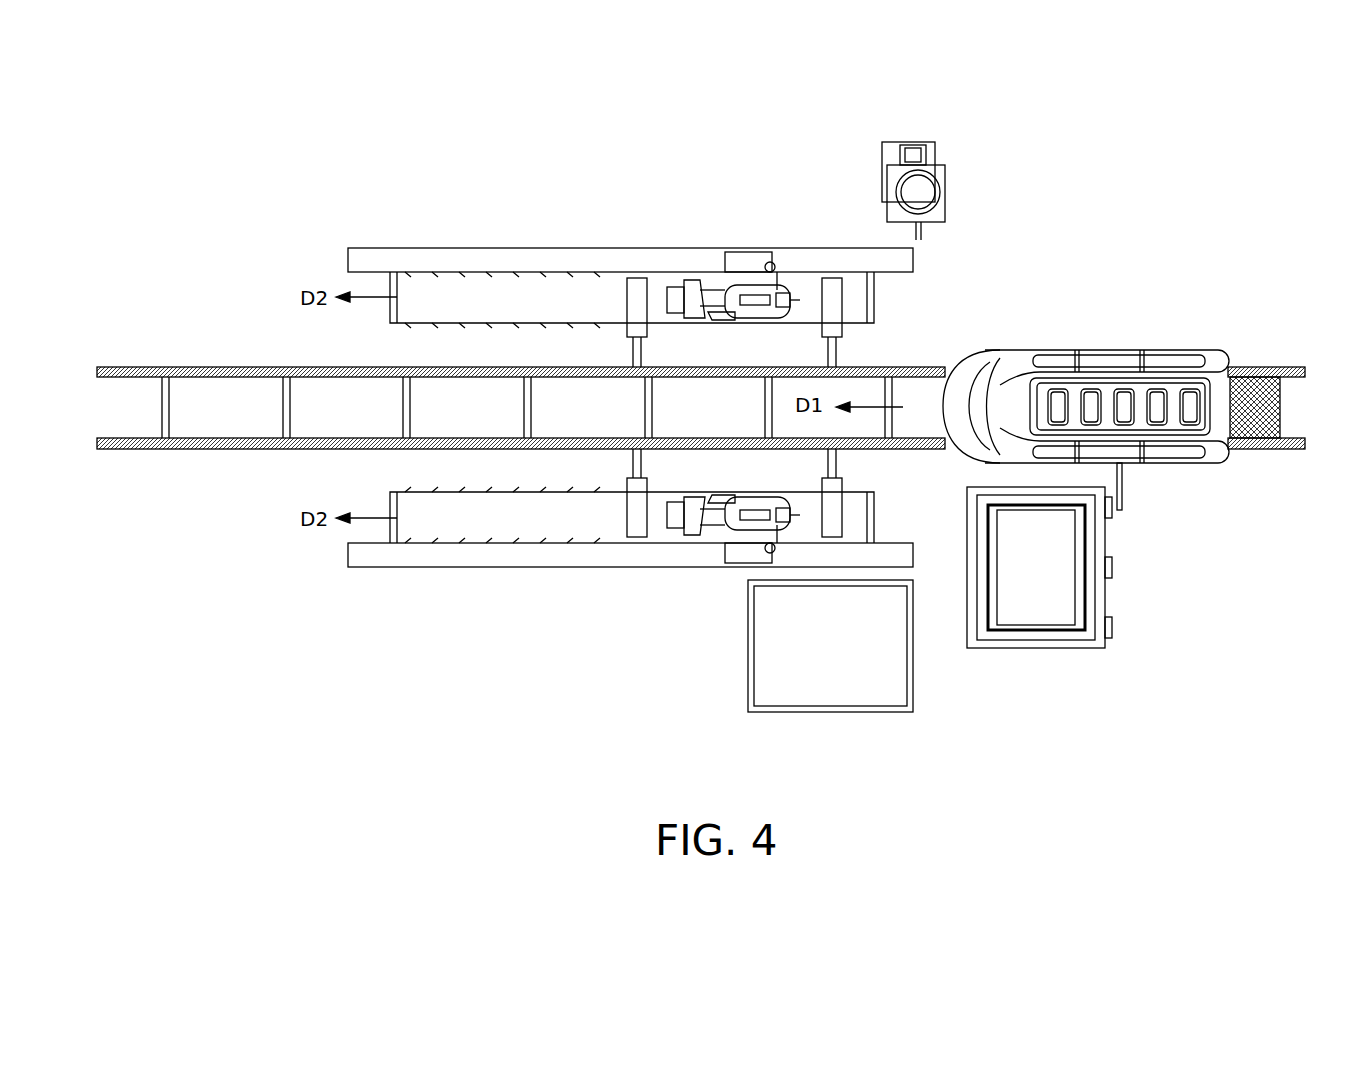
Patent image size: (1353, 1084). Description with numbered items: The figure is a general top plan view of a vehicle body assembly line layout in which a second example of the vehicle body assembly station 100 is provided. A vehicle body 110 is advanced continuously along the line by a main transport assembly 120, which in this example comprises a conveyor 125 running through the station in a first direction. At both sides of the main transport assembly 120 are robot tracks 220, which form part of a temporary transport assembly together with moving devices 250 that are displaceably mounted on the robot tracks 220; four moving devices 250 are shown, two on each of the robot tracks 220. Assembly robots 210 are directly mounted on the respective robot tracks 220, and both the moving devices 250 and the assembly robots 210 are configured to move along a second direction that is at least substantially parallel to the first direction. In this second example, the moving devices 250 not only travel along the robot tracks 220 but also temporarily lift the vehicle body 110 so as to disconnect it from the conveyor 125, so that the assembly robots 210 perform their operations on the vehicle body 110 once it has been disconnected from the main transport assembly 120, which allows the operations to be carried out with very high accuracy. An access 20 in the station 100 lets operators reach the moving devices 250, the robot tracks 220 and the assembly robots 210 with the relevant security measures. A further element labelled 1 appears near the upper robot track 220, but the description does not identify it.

The vehicle body assembly station 100 is at (1048, 252).
The vehicle body 110 is at (958, 332).
The main transport assembly 120 is at (701, 350).
The conveyor 125 is at (150, 367).
The robot tracks 220 is at (483, 280).
The moving devices 250 is at (637, 285).
The assembly robots 210 is at (736, 270).
The access 20 is at (763, 670).
The camera 1 is at (915, 193).